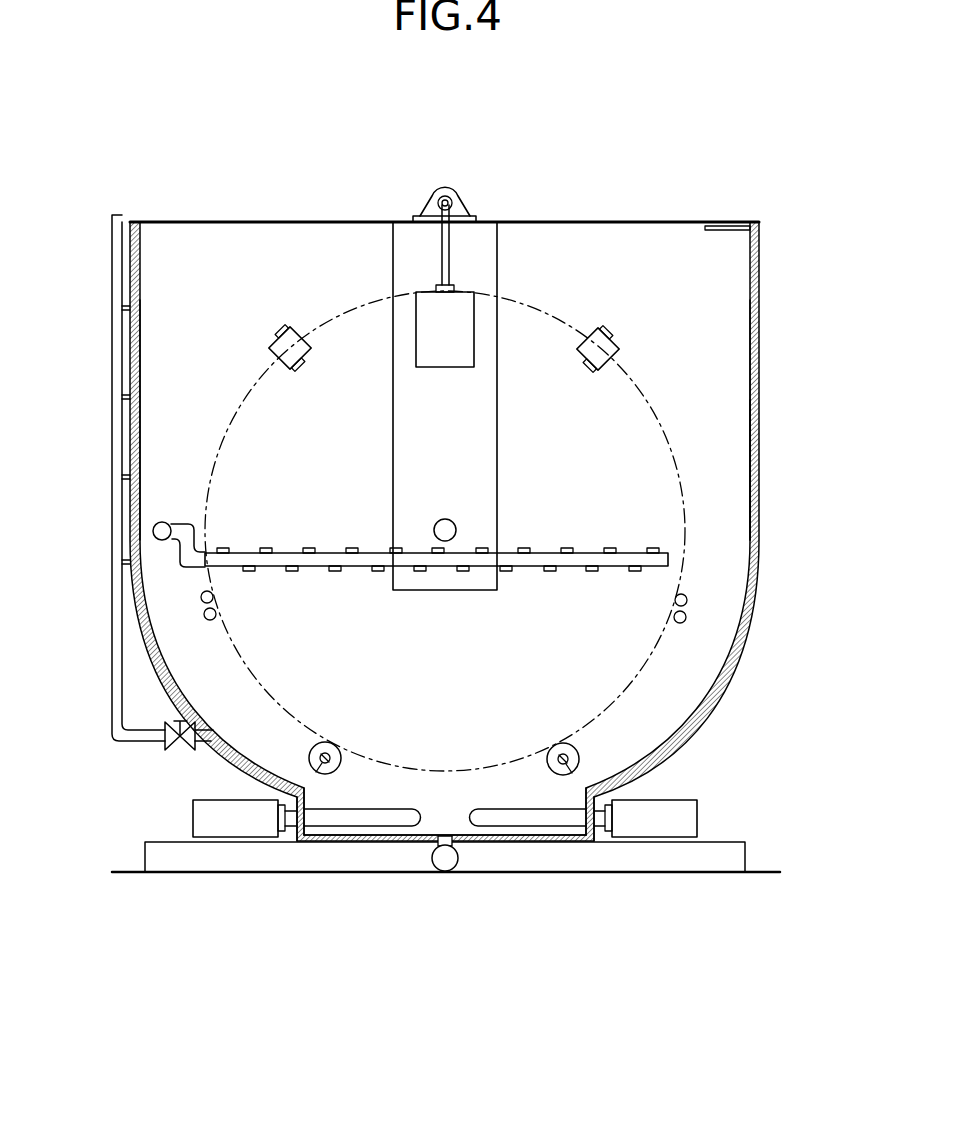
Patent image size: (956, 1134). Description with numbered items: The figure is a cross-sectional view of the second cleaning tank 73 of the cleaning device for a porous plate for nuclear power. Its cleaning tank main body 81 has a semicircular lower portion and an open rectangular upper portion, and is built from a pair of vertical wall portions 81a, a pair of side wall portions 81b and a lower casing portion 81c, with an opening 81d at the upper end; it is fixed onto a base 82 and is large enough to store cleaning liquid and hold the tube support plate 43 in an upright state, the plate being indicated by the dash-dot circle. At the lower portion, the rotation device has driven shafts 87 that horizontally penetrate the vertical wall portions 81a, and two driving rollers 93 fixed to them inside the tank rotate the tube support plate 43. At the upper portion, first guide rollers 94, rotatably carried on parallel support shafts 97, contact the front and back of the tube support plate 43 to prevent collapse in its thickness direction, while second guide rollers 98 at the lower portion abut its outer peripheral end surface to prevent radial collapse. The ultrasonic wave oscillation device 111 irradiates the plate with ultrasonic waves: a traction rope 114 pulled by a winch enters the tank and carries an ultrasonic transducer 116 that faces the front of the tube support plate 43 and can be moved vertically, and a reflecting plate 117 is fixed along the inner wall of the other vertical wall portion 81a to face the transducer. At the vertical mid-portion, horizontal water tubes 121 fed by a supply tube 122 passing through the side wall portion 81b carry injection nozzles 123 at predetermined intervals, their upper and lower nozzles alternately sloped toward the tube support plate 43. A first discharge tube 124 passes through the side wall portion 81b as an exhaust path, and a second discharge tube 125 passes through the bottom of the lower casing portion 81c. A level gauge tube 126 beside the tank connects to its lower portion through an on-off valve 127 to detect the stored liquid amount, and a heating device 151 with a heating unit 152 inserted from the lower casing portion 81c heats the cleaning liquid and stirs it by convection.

The second cleaning tank 73 is at (700, 148).
The cleaning tank main body 81 is at (765, 257).
The vertical wall portions 81a is at (733, 412).
The side wall portions 81b is at (753, 483).
The lower casing portion 81c is at (333, 840).
The opening 81d is at (193, 250).
The base 82 is at (735, 855).
The driven shafts 87 is at (600, 790).
The driving rollers 93 is at (580, 757).
The first guide rollers 94 is at (300, 332).
The support shafts 97 is at (283, 330).
The second guide rollers 98 is at (686, 617).
The ultrasonic wave oscillation device 111 is at (446, 183).
The traction rope 114 is at (452, 242).
The ultrasonic transducer 116 is at (465, 335).
The reflecting plate 117 is at (478, 397).
The water tubes 121 is at (290, 565).
The supply tube 122 is at (153, 531).
The injection nozzles 123 is at (352, 549).
The first discharge tube 124 is at (443, 518).
The second discharge tube 125 is at (445, 872).
The level gauge tube 126 is at (112, 392).
The on-off valve 127 is at (140, 731).
The heating device 151 is at (228, 820).
The heating unit 152 is at (393, 818).
The tube support plate 43 is at (377, 295).